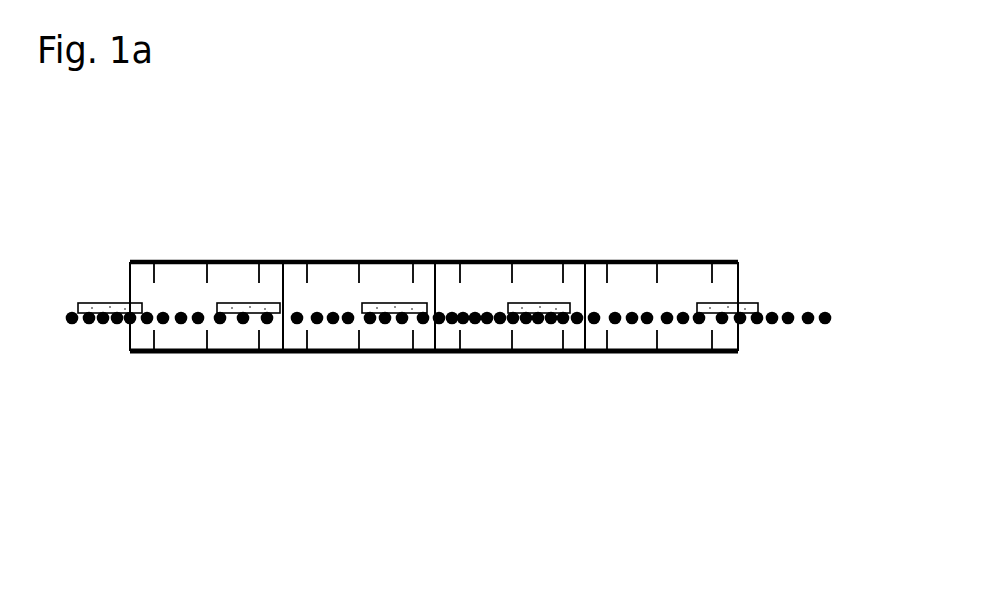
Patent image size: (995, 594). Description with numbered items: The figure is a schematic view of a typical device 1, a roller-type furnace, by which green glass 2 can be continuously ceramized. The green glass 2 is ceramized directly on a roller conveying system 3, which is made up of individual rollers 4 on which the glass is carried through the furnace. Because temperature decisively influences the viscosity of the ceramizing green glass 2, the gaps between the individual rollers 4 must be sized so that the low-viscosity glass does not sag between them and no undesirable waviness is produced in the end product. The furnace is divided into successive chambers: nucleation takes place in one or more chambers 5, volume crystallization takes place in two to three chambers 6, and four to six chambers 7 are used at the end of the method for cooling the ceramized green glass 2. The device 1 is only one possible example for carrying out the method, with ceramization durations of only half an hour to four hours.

The device 1 is at (799, 137).
The green glass 2 is at (115, 303).
The roller conveying system 3 is at (846, 313).
The rollers 4 is at (330, 318).
The chambers 5 is at (183, 289).
The chambers 6 is at (330, 282).
The chambers 7 is at (627, 287).